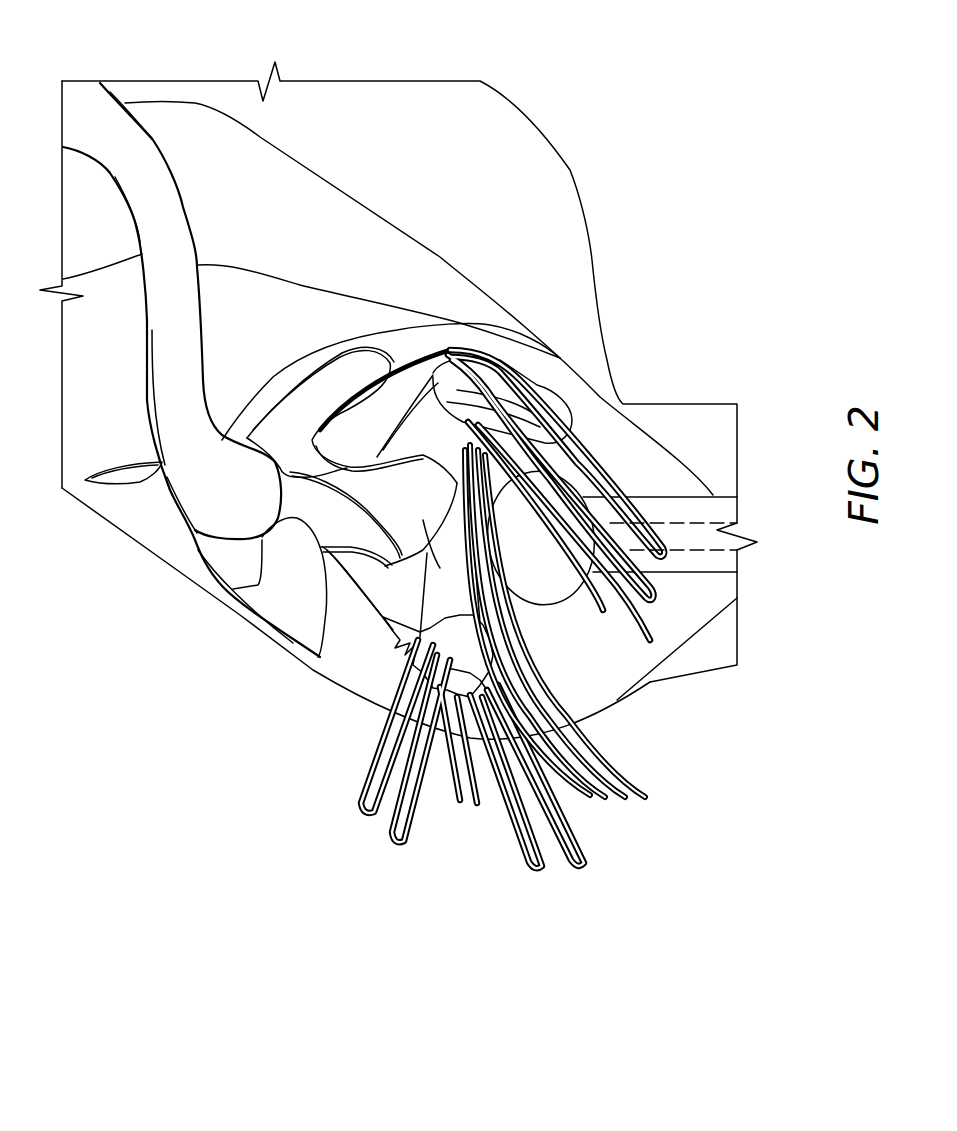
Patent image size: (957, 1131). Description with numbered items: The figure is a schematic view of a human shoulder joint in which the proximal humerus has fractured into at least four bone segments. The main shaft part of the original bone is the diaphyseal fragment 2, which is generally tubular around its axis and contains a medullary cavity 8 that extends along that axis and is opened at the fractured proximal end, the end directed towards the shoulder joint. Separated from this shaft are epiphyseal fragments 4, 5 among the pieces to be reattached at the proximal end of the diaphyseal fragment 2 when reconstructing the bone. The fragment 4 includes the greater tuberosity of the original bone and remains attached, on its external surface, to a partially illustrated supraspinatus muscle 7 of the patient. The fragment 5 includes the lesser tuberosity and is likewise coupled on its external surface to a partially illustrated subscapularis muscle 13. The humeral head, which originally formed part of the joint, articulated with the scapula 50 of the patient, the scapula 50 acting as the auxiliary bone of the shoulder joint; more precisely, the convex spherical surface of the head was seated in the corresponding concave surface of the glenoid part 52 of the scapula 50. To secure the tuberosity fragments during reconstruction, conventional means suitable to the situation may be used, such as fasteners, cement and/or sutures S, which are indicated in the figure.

The diaphyseal fragment 2 is at (705, 572).
The epiphyseal fragment 4 is at (485, 722).
The epiphyseal fragment 5 is at (478, 375).
The supraspinatus muscle 7 is at (383, 597).
The medullary cavity 8 is at (677, 523).
The subscapularis muscle 13 is at (407, 380).
The scapula 50 is at (345, 408).
The glenoid part 52 is at (643, 685).
The sutures S is at (617, 650).